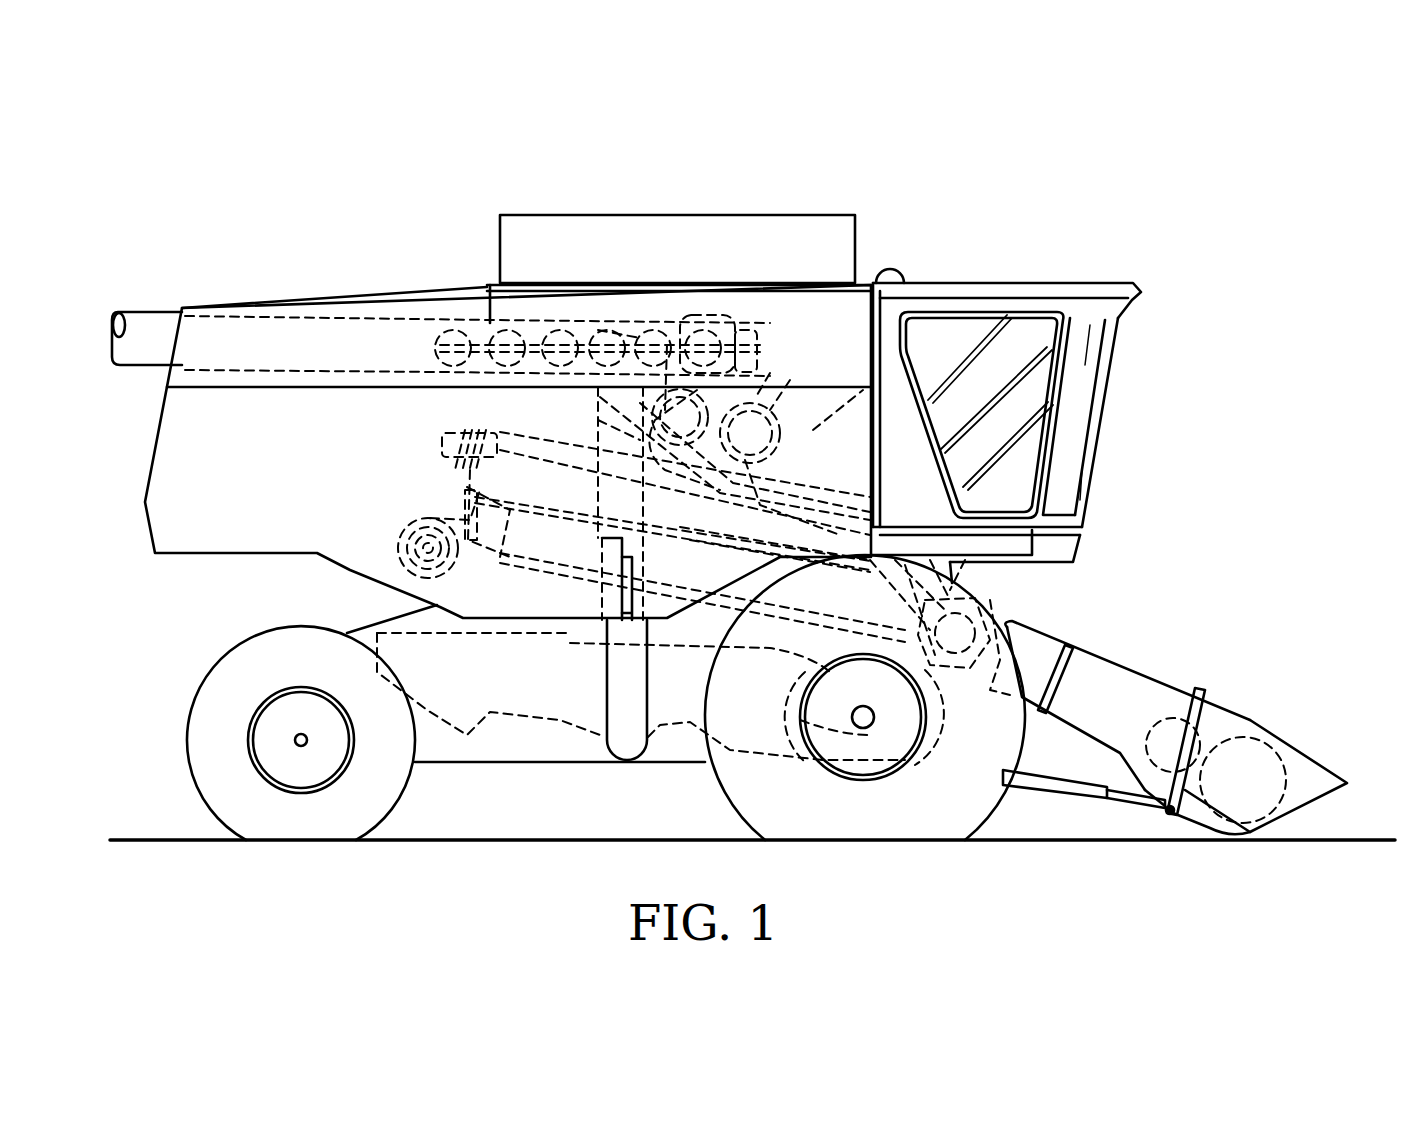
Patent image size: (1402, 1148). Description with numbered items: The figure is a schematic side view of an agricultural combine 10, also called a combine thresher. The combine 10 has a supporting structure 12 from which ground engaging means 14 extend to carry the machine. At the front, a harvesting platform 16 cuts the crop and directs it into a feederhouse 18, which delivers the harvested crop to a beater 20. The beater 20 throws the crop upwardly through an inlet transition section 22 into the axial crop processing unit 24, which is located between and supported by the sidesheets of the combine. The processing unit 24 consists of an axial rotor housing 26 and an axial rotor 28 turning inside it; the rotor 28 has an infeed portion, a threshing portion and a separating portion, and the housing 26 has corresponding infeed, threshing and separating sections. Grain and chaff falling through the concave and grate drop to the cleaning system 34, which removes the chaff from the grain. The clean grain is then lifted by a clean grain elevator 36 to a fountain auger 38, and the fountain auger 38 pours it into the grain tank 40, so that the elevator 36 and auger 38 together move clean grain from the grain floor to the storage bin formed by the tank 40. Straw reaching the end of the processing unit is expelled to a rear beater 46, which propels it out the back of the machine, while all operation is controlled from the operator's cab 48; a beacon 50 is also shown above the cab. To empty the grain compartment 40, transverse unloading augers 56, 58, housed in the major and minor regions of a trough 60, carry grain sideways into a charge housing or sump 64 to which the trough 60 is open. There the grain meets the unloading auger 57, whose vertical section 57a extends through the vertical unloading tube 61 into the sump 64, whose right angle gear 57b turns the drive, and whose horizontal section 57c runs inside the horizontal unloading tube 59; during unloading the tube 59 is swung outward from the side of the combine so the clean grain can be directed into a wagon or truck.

The agricultural combine 10 is at (1116, 198).
The supporting structure 12 is at (403, 615).
The ground engaging means 14 is at (408, 780).
The harvesting platform 16 is at (1245, 720).
The feederhouse 18 is at (1098, 660).
The beater 20 is at (932, 622).
The inlet transition section 22 is at (955, 584).
The axial crop processing unit 24 is at (783, 482).
The axial rotor housing 26 is at (545, 430).
The axial rotor 28 is at (490, 425).
The cleaning system 34 is at (567, 636).
The clean grain elevator 36 is at (645, 672).
The fountain auger 38 is at (693, 322).
The grain tank 40 is at (862, 377).
The beater 46 is at (410, 520).
The operator's cab 48 is at (995, 389).
The beacon light 50 is at (900, 268).
The transverse unloading auger 56 is at (772, 426).
The unloading auger 57 is at (620, 330).
The vertical section 57a is at (772, 405).
The right angle gear 57b is at (760, 382).
The horizontal section 57c is at (667, 345).
The transverse unloading auger 58 is at (660, 410).
The horizontal unloading tube 59 is at (140, 312).
The trough 60 is at (818, 438).
The vertical unloading tube 61 is at (780, 373).
The charge housing 64 is at (742, 530).